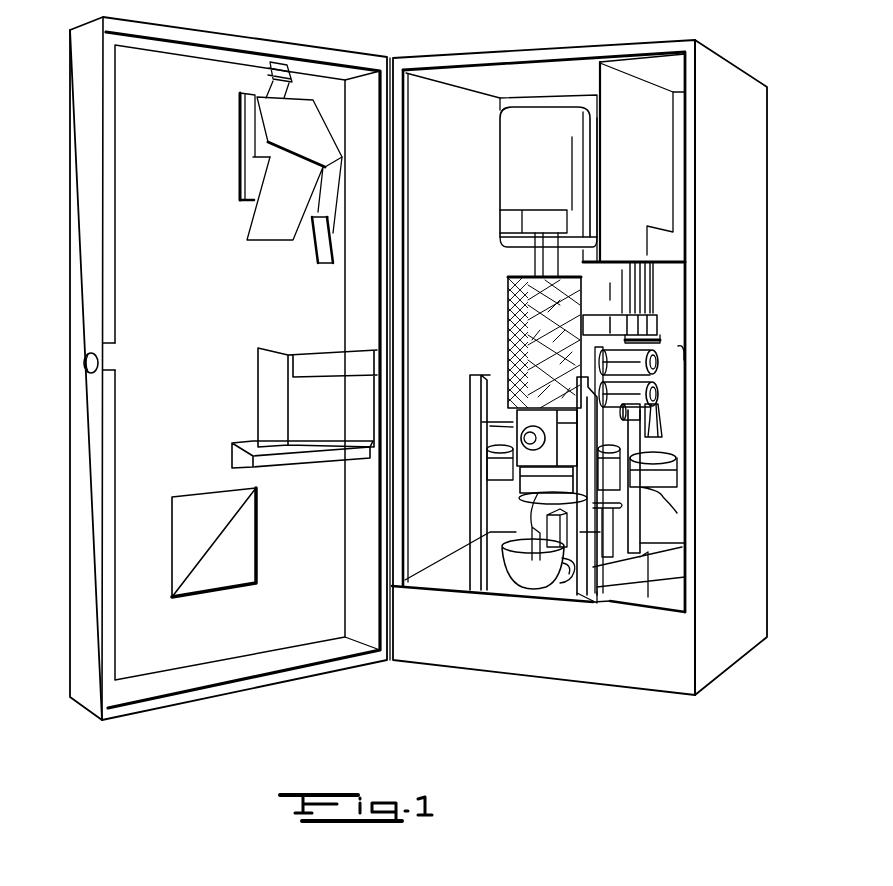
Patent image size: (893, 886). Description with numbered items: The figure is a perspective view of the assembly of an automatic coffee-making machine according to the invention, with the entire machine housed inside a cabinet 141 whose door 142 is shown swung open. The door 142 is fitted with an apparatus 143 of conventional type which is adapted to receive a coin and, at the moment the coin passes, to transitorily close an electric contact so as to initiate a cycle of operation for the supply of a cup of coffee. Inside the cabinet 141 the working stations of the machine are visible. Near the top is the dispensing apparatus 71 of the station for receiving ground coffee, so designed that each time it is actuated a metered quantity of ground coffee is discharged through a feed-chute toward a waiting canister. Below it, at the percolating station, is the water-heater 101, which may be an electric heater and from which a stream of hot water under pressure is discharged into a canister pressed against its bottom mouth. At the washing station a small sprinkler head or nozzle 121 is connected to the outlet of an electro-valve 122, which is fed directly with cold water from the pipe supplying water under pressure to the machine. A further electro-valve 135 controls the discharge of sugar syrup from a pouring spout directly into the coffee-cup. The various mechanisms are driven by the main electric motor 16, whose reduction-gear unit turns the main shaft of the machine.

The main electric motor 16 is at (556, 195).
The dispensing apparatus 71 is at (651, 296).
The water-heater 101 is at (561, 337).
The sprinkler head or nozzle 121 is at (652, 438).
The electro-valve 122 is at (658, 394).
The electro-valve 135 is at (652, 356).
The cabinet 141 is at (756, 602).
The door 142 is at (80, 306).
The coin-receiving apparatus 143 is at (238, 184).